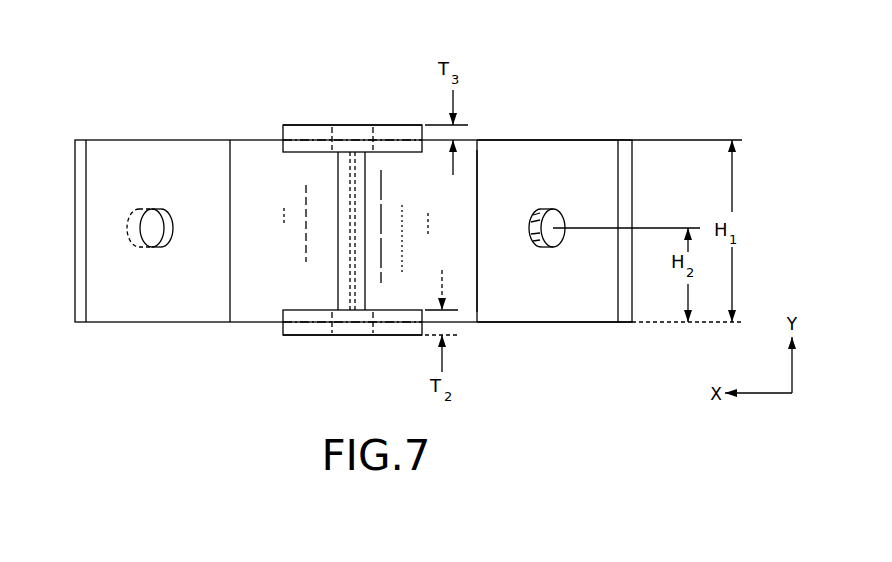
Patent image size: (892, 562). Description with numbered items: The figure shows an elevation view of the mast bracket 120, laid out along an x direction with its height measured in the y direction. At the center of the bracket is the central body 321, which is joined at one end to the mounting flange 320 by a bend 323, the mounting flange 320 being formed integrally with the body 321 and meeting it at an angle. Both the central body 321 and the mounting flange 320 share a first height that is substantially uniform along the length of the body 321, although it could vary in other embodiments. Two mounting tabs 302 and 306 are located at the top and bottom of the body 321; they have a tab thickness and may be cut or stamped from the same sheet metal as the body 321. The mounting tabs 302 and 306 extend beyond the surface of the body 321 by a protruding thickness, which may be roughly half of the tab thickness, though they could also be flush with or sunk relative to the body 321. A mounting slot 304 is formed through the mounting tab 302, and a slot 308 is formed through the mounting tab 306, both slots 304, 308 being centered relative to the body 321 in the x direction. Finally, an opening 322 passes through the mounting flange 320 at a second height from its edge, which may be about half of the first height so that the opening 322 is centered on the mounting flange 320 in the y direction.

The mast bracket 120 is at (130, 115).
The mounting tab 302 is at (297, 125).
The mounting slot 304 is at (331, 140).
The mounting tab 306 is at (300, 336).
The slot 308 is at (374, 325).
The mounting flange 320 is at (577, 148).
The body 321 is at (414, 165).
The opening 322 is at (566, 216).
The bend 323 is at (477, 205).